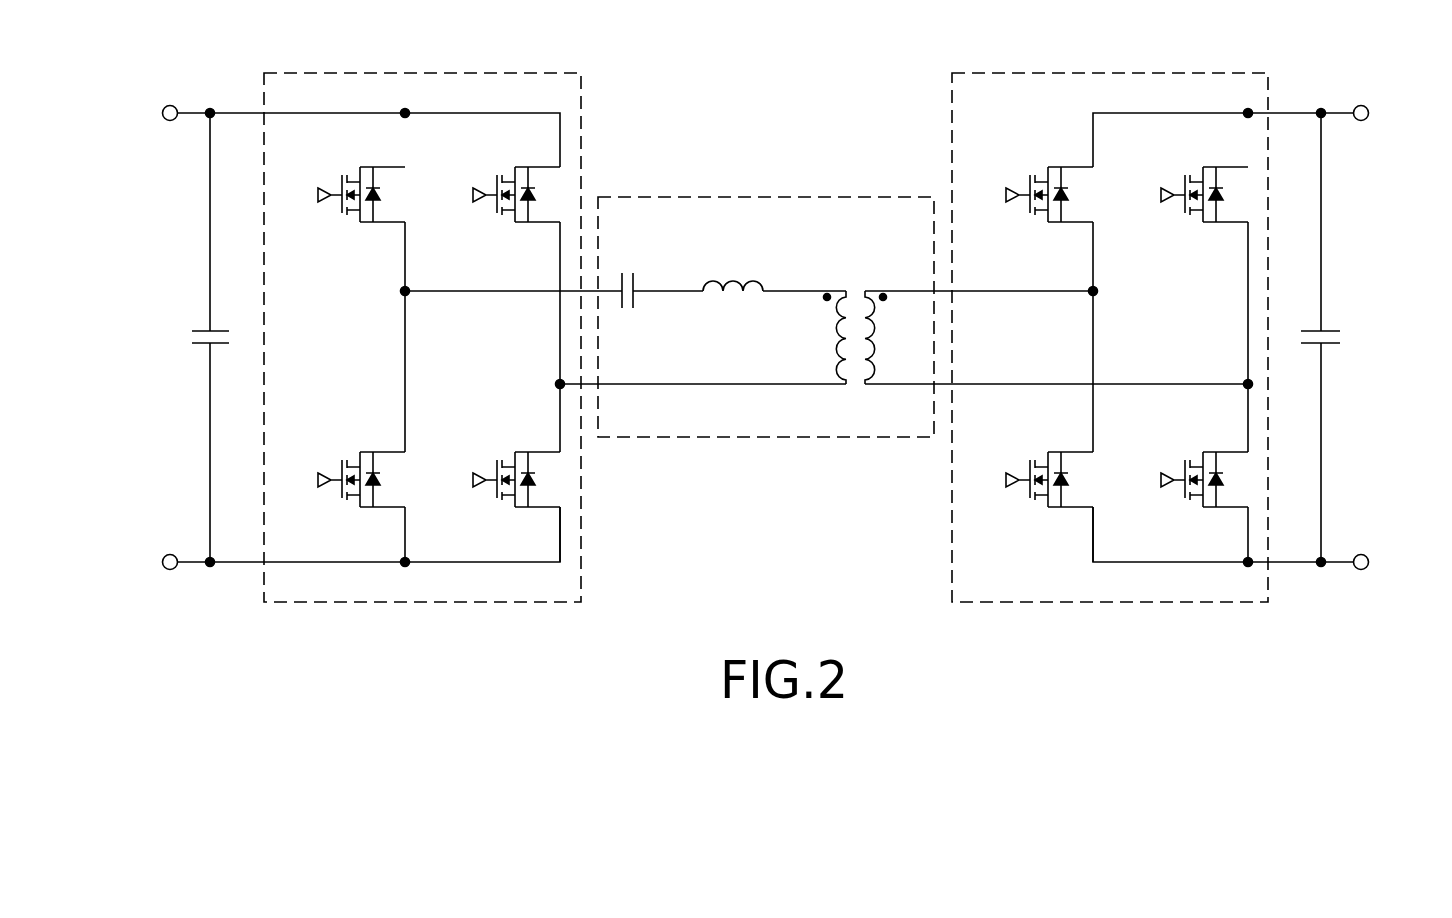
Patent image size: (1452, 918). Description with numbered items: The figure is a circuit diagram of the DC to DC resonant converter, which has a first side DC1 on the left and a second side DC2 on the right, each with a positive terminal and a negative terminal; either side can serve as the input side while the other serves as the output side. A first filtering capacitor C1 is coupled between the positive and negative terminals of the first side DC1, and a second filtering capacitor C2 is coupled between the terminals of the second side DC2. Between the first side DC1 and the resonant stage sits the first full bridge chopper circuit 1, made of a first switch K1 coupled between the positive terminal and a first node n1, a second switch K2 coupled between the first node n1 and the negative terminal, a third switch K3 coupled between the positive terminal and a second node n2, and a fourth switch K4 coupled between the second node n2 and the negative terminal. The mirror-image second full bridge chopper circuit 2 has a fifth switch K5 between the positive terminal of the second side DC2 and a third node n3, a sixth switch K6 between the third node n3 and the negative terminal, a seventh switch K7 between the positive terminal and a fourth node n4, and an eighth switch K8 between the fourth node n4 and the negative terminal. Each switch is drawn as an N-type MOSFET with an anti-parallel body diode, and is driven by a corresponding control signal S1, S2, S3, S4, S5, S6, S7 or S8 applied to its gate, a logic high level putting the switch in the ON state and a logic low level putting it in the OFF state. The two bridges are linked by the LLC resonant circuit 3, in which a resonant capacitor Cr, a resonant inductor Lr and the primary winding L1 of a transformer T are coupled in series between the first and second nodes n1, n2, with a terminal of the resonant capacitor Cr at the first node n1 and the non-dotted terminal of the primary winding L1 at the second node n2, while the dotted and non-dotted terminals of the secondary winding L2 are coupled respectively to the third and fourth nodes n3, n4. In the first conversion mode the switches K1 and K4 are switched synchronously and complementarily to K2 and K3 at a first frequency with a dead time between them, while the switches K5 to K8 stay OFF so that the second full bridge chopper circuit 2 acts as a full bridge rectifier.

The first full bridge chopper circuit 1 is at (540, 72).
The second full bridge chopper circuit 2 is at (1228, 72).
The LLC resonant circuit 3 is at (767, 197).
The first control signal S1 is at (353, 210).
The second control signal S2 is at (353, 469).
The third control signal S3 is at (508, 210).
The fourth control signal S4 is at (508, 469).
The fifth control signal S5 is at (1041, 210).
The sixth control signal S6 is at (1041, 469).
The seventh control signal S7 is at (1196, 210).
The eighth control signal S8 is at (1196, 469).
The first switch K1 is at (341, 257).
The second switch K2 is at (341, 419).
The third switch K3 is at (496, 257).
The fourth switch K4 is at (496, 419).
The fifth switch K5 is at (1029, 257).
The sixth switch K6 is at (1029, 419).
The seventh switch K7 is at (1184, 257).
The eighth switch K8 is at (1184, 419).
The first node n1 is at (409, 294).
The second node n2 is at (557, 380).
The third node n3 is at (1097, 295).
The fourth node n4 is at (1245, 380).
The first filtering capacitor C1 is at (223, 337).
The second filtering capacitor C2 is at (1311, 337).
The resonant capacitor Cr is at (629, 271).
The resonant inductor Lr is at (733, 263).
The transformer T is at (859, 309).
The primary winding L1 is at (821, 337).
The secondary winding L2 is at (893, 337).
The first side DC1 is at (121, 339).
The second side DC2 is at (1412, 339).